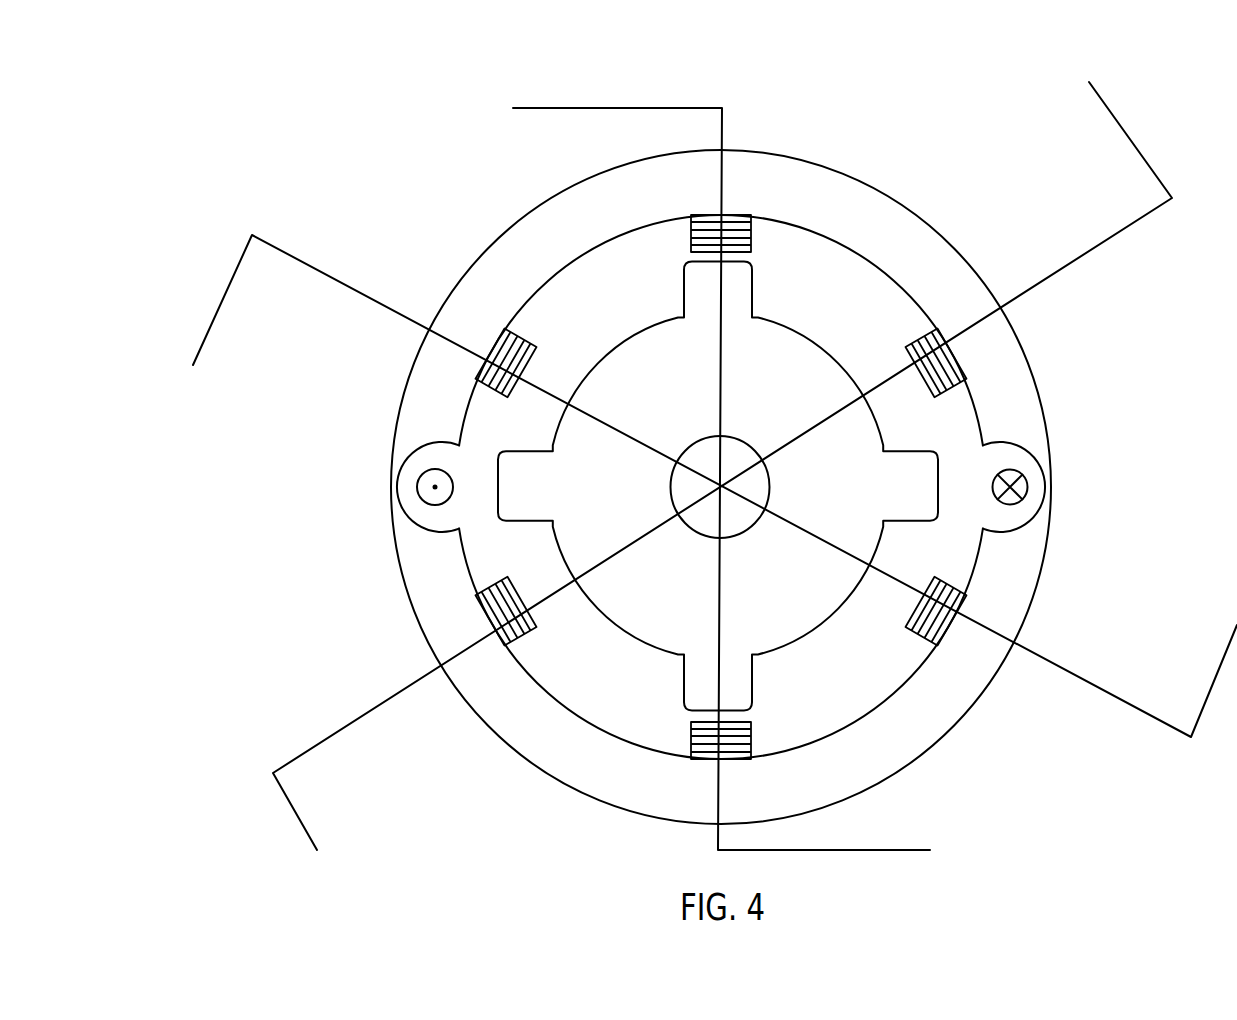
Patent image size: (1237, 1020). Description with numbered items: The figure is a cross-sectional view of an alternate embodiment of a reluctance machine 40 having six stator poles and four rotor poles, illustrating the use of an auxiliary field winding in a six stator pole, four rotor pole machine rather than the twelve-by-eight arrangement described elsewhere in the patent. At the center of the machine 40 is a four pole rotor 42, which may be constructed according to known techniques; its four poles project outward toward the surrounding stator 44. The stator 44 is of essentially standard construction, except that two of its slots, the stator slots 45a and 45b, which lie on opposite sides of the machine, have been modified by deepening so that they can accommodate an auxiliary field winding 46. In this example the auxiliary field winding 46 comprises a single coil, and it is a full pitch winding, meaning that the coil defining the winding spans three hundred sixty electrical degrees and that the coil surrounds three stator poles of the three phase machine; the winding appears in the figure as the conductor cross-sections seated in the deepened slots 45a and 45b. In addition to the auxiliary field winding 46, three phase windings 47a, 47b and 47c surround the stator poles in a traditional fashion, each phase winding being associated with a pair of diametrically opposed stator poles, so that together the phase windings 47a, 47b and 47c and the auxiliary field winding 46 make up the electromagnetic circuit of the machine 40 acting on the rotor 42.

The reluctance machine 40 is at (531, 200).
The four pole rotor 42 is at (918, 487).
The stator 44 is at (795, 198).
The stator slot 45a is at (394, 461).
The stator slot 45b is at (1051, 461).
The auxiliary field winding 46 is at (424, 513).
The phase winding 47a is at (536, 98).
The phase winding 47b is at (1081, 100).
The phase winding 47c is at (208, 358).